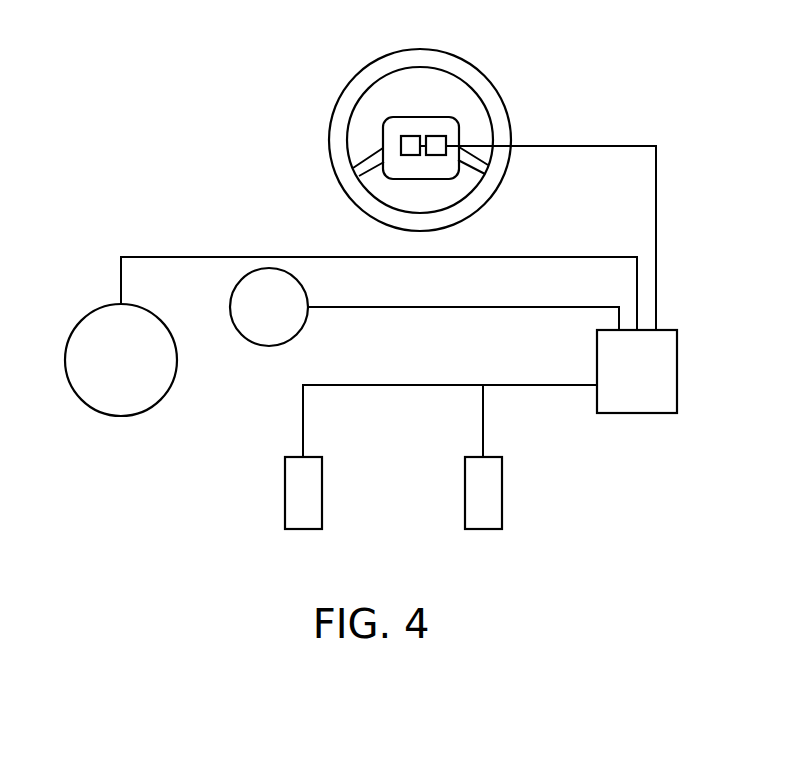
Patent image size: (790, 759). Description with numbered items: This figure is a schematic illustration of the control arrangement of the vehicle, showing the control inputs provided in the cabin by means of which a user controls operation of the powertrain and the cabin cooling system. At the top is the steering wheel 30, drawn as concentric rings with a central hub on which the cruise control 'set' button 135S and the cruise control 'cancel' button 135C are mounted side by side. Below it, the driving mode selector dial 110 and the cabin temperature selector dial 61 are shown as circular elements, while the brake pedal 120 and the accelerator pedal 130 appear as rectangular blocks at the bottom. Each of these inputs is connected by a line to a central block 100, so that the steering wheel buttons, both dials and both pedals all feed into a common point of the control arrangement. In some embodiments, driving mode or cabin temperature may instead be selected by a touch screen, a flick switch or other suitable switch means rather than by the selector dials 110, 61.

The steering wheel 30 is at (330, 145).
The cruise control 'set' button 135S is at (410, 136).
The cruise control 'cancel' button 135C is at (437, 136).
The cabin temperature selector dial 61 is at (287, 321).
The controller 100 is at (614, 385).
The driving mode selector dial 110 is at (97, 373).
The brake pedal 120 is at (285, 493).
The accelerator pedal 130 is at (502, 493).